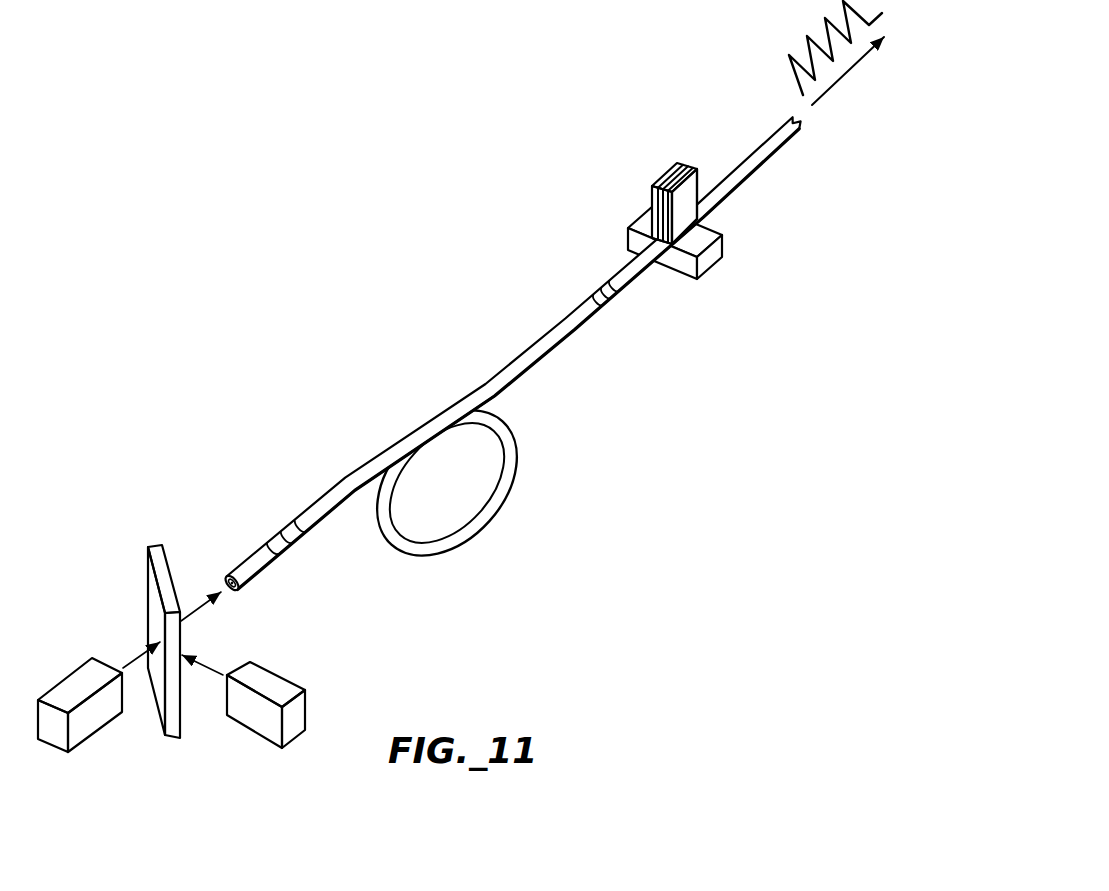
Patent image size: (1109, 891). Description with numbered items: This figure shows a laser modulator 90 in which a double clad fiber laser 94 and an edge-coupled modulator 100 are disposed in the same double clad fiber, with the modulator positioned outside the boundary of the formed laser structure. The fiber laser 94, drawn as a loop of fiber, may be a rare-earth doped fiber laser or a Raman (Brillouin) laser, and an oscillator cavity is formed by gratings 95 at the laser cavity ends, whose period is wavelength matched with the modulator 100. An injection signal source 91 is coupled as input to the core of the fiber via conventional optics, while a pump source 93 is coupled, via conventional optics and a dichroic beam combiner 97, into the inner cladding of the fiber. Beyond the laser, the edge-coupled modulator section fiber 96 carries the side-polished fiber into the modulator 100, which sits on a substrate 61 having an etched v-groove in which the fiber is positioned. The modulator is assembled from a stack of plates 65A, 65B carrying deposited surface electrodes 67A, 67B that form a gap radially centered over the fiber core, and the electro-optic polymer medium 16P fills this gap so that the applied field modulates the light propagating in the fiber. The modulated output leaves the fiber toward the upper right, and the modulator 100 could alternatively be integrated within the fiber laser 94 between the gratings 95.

The laser modulator 90 is at (526, 272).
The injection signal source 91 is at (84, 731).
The pump source 93 is at (272, 683).
The dichroic beam combiner 97 is at (157, 675).
The gratings 95 is at (285, 529).
The double clad fiber laser 94 is at (430, 417).
The edge-coupled modulator section fiber 96 is at (617, 272).
The substrate 61 is at (641, 226).
The edge-coupled modulator 100 is at (661, 171).
The first outer plate 65A is at (653, 193).
The surface electrode 67A is at (683, 164).
The polymer medium 16P is at (686, 163).
The surface electrode 67B is at (697, 167).
The second outer plate 65B is at (690, 205).